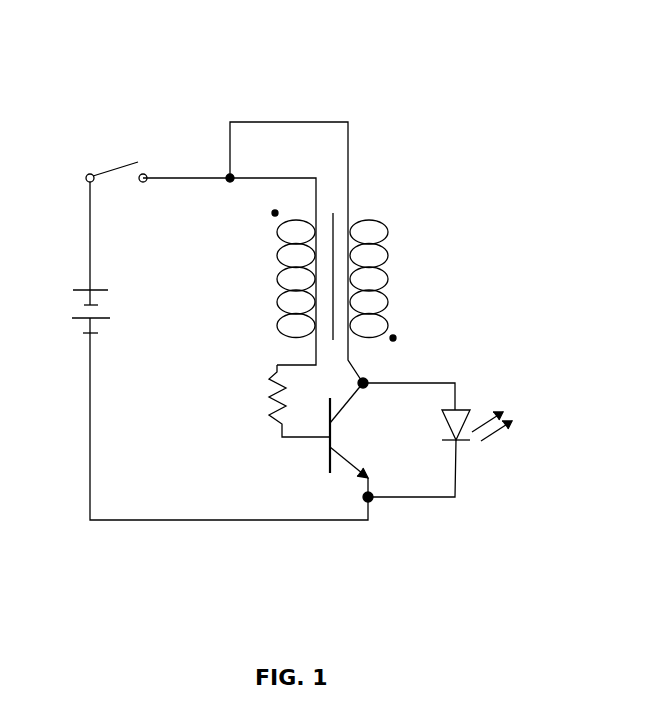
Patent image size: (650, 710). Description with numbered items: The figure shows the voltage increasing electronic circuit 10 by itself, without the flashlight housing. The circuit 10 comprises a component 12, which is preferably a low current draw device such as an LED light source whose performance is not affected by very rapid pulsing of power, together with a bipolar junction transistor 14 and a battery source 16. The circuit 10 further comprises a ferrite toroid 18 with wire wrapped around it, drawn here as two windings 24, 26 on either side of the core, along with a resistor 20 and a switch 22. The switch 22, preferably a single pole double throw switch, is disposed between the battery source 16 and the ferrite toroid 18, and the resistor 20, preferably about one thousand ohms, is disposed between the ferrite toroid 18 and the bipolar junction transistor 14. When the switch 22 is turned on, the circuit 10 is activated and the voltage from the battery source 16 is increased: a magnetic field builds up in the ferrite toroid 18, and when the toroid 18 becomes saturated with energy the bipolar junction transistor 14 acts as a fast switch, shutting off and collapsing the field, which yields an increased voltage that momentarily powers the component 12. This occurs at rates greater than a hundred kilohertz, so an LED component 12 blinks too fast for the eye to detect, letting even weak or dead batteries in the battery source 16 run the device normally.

The electronic circuit 10 is at (260, 88).
The component 12 is at (437, 440).
The bipolar junction transistor 14 is at (336, 440).
The battery source 16 is at (72, 311).
The ferrite toroid 18 is at (348, 232).
The resistor 20 is at (285, 401).
The switch 22 is at (116, 158).
The secondary coil 24 is at (389, 280).
The primary coil 26 is at (278, 274).